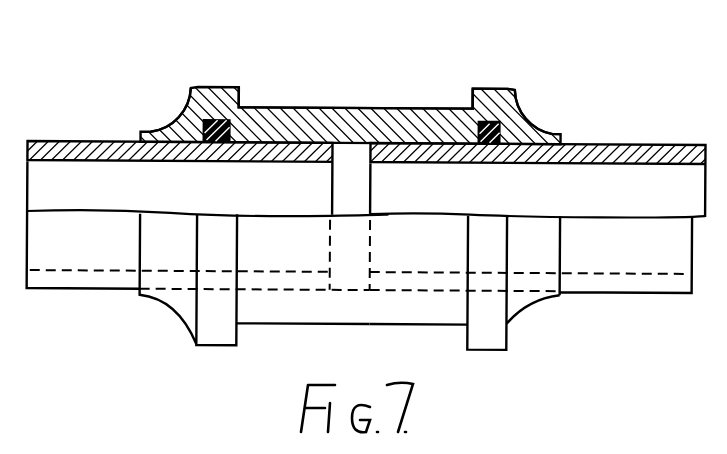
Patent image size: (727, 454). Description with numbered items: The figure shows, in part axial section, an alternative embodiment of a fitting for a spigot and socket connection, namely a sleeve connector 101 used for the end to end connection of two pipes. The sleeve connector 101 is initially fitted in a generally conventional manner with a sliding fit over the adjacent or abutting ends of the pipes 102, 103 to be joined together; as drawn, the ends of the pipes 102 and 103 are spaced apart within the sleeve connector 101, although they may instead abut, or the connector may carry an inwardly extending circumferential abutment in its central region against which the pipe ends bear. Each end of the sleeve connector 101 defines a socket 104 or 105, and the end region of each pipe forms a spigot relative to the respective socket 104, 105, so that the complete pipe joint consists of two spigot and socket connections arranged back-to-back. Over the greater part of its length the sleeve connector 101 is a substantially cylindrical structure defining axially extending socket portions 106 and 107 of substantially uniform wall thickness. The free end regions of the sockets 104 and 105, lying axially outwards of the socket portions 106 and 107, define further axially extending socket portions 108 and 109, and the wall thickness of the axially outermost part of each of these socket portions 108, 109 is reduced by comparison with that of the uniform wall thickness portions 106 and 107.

The sleeve connector 101 is at (375, 96).
The pipe 102 is at (77, 148).
The pipe 103 is at (629, 152).
The socket 104 is at (245, 116).
The socket 105 is at (481, 97).
The socket portion 106 is at (300, 116).
The socket portion 107 is at (440, 120).
The socket portion 108 is at (193, 117).
The socket portion 109 is at (525, 131).